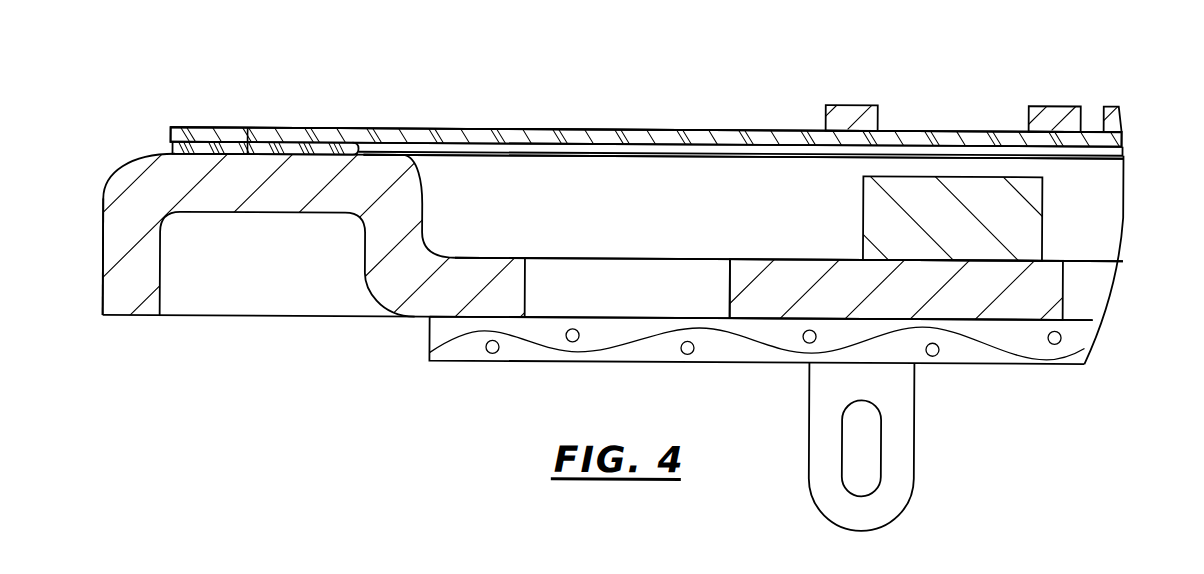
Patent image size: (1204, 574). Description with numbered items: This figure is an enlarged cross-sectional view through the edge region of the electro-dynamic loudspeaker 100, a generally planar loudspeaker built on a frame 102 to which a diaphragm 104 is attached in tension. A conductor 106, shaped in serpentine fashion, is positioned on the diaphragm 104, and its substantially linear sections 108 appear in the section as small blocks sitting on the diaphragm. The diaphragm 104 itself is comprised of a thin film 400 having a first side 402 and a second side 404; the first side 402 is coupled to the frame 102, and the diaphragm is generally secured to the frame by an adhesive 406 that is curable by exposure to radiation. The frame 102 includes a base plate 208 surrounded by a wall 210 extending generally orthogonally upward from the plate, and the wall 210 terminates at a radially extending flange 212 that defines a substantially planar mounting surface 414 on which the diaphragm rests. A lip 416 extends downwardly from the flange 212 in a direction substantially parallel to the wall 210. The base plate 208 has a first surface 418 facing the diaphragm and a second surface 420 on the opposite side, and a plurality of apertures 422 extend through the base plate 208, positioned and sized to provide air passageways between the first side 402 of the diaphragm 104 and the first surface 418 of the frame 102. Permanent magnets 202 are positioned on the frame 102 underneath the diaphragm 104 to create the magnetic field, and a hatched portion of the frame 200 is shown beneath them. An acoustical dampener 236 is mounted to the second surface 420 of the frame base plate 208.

The electro-dynamic loudspeaker 100 is at (395, 75).
The frame 102 is at (111, 140).
The diaphragm 104 is at (543, 122).
The conductor 106 is at (1092, 76).
The linear sections 108 is at (848, 103).
The lower receiver body portion 200 is at (754, 250).
The permanent magnets 202 is at (863, 218).
The base plate 208 is at (500, 256).
The wall 210 is at (406, 178).
The flange 212 is at (213, 215).
The acoustical dampener 236 is at (1006, 374).
The thin film 400 is at (680, 141).
The first side 402 is at (597, 147).
The second side 404 is at (742, 129).
The adhesive 406 is at (172, 148).
The mounting surface 414 is at (247, 138).
The lip 416 is at (103, 244).
The first surface 418 is at (436, 246).
The second surface 420 is at (489, 318).
The apertures 422 is at (527, 288).